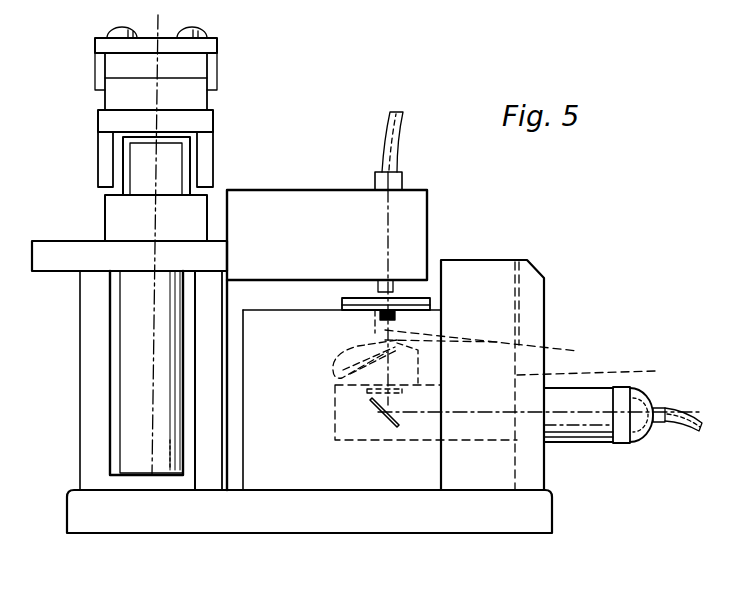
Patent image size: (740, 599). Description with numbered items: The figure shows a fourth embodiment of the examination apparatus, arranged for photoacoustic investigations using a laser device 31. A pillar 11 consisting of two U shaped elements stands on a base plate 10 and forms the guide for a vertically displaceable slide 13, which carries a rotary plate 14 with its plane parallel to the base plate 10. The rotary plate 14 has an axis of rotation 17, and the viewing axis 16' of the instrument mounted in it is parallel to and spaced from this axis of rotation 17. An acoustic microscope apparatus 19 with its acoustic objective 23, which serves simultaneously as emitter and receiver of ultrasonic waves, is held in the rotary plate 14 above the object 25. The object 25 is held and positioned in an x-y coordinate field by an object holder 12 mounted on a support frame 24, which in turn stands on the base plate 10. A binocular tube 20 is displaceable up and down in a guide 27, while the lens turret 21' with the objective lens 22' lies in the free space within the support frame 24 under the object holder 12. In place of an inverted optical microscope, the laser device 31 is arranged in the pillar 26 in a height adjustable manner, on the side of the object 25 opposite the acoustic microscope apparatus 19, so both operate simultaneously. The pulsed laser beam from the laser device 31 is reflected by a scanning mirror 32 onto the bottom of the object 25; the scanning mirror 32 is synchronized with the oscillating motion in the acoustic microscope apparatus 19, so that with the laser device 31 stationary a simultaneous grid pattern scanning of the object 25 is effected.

The base plate 10 is at (180, 497).
The pillar 11 is at (99, 379).
The object holder 12 is at (433, 303).
The slide 13 is at (138, 417).
The rotary plate 14 is at (62, 255).
The viewing axis 16' is at (479, 327).
The axis of rotation 17 is at (150, 348).
The acoustic microscope apparatus 19 is at (290, 222).
The binocular tube 20 is at (183, 64).
The lens turret 21' is at (504, 351).
The objective lens 22' is at (504, 325).
The acoustic objective 23 is at (393, 283).
The support frame 24 is at (293, 462).
The object 25 is at (415, 298).
The pillar 26 is at (490, 466).
The guide 27 is at (605, 400).
The laser device 31 is at (600, 424).
The scanning mirror 32 is at (377, 413).